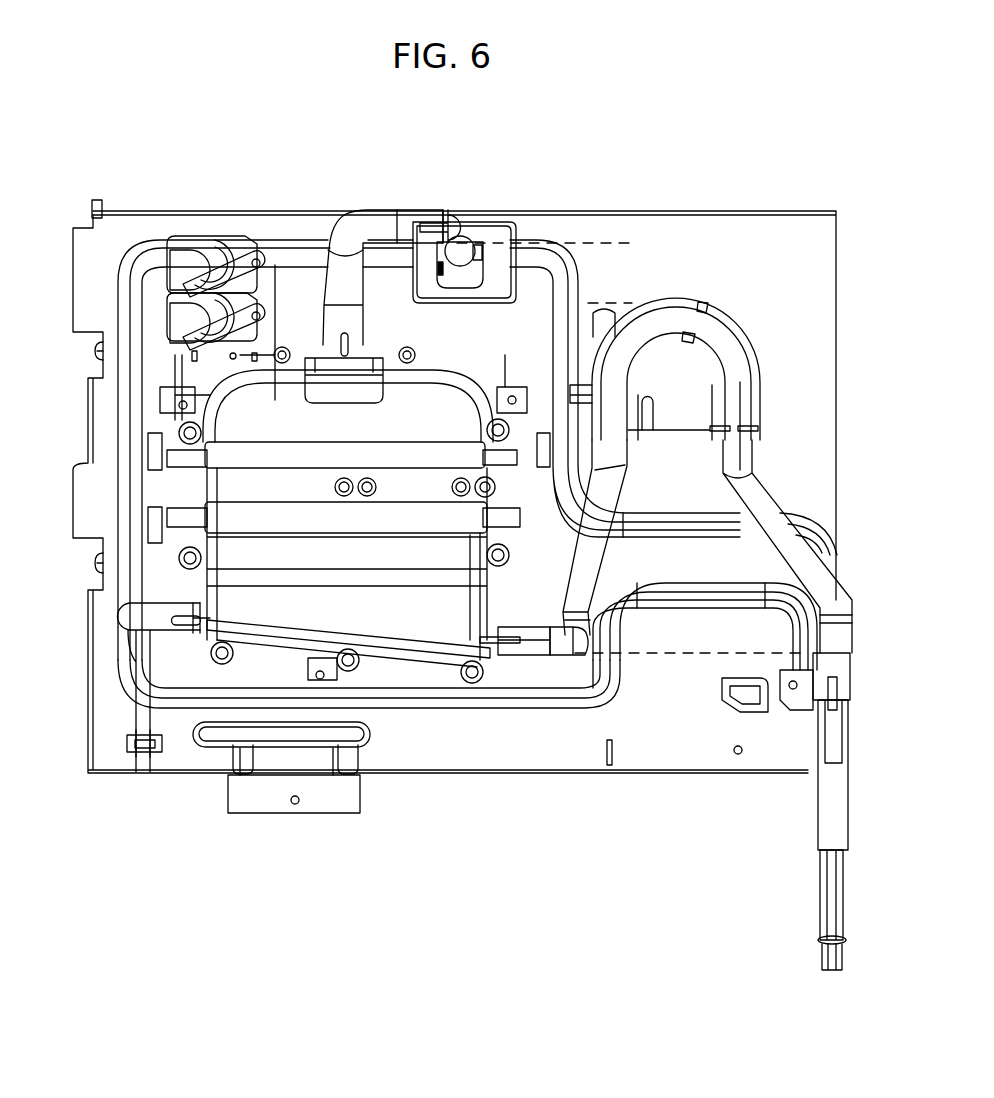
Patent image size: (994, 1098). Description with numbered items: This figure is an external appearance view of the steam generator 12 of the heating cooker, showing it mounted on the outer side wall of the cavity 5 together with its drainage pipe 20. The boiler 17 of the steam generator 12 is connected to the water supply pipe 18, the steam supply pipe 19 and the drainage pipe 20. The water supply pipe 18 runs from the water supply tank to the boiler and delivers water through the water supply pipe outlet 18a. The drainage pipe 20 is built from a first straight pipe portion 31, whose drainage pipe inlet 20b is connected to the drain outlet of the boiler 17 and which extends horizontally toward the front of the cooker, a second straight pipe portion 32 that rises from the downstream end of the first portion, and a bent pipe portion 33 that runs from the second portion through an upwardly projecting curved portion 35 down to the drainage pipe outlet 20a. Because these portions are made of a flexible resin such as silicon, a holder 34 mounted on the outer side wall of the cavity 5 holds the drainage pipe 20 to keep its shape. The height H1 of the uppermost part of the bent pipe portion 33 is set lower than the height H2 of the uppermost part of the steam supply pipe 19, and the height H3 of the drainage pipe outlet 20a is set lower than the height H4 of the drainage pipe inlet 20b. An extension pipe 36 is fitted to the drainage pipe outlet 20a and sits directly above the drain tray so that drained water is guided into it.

The cavity 5 is at (125, 233).
The steam generator 12 is at (412, 726).
The boiler 17 is at (425, 408).
The water supply pipe 18 is at (155, 622).
The water supply pipe outlet 18a is at (193, 630).
The steam supply pipe 19 is at (350, 228).
The drainage pipe 20 is at (757, 502).
The drainage pipe outlet 20a is at (810, 660).
The drainage pipe inlet 20b is at (485, 684).
The first straight pipe portion 31 is at (543, 647).
The second straight pipe portion 32 is at (577, 657).
The bent pipe portion 33 is at (590, 563).
The holder 34 is at (758, 380).
The curved portion 35 is at (675, 322).
The extension pipe 36 is at (833, 805).
The height of uppermost portion of bent pipe portion H1 is at (603, 303).
The height of uppermost portion of steam supply pipe H2 is at (615, 241).
The height of drainage pipe outlet H3 is at (712, 660).
The height of drainage pipe inlet H4 is at (660, 657).